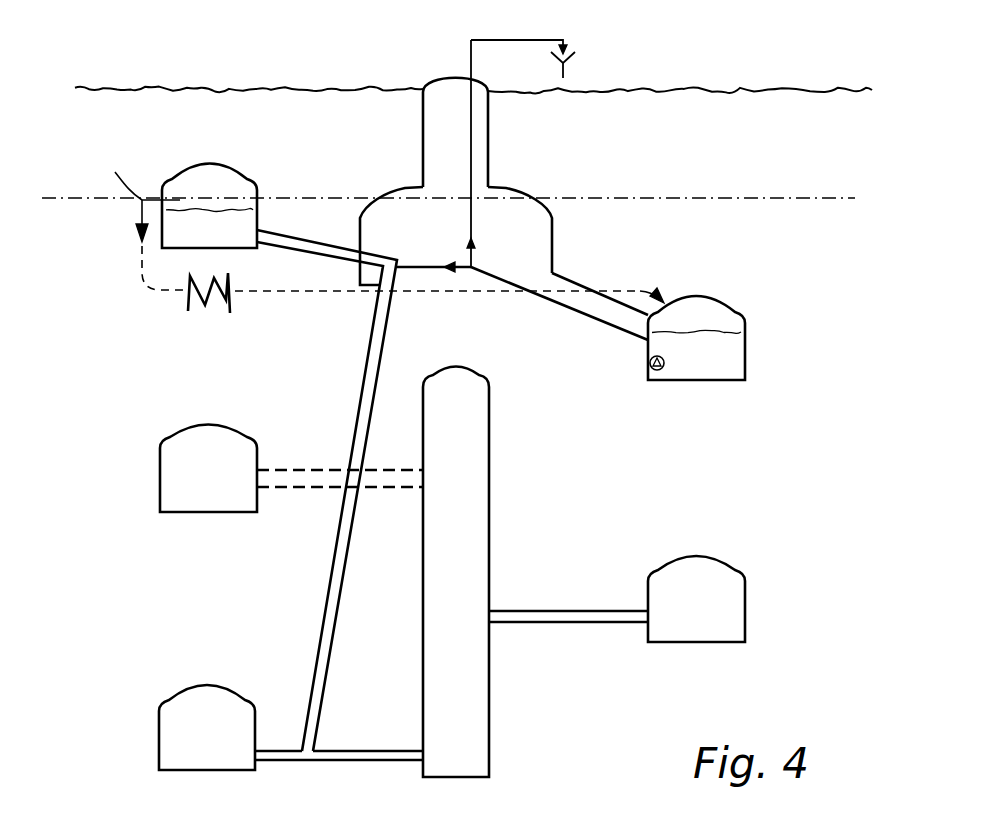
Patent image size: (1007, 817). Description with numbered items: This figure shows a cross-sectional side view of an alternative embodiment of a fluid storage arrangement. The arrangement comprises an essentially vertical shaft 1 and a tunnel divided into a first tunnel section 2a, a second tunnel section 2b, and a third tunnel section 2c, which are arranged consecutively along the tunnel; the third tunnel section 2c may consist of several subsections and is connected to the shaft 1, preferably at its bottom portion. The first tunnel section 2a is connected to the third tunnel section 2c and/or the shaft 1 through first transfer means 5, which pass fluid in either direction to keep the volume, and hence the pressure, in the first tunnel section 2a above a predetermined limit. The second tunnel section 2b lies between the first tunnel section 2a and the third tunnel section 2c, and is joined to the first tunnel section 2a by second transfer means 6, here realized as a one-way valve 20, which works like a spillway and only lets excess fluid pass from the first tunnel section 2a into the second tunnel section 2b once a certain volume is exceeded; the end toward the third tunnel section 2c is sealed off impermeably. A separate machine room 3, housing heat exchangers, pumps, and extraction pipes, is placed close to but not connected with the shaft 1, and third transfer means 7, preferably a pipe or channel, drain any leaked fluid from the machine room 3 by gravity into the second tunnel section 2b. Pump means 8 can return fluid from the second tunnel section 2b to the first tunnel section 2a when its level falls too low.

The shaft 1 is at (456, 572).
The first tunnel section 2a is at (209, 206).
The second tunnel section 2b is at (696, 338).
The third tunnel section 2c is at (452, 598).
The machine room 3 is at (456, 181).
The first transfer means 5 is at (330, 606).
The second transfer means 6 is at (686, 246).
The third transfer means 7 is at (572, 284).
The pump means 8 is at (660, 371).
The one-way valve 20 is at (162, 306).